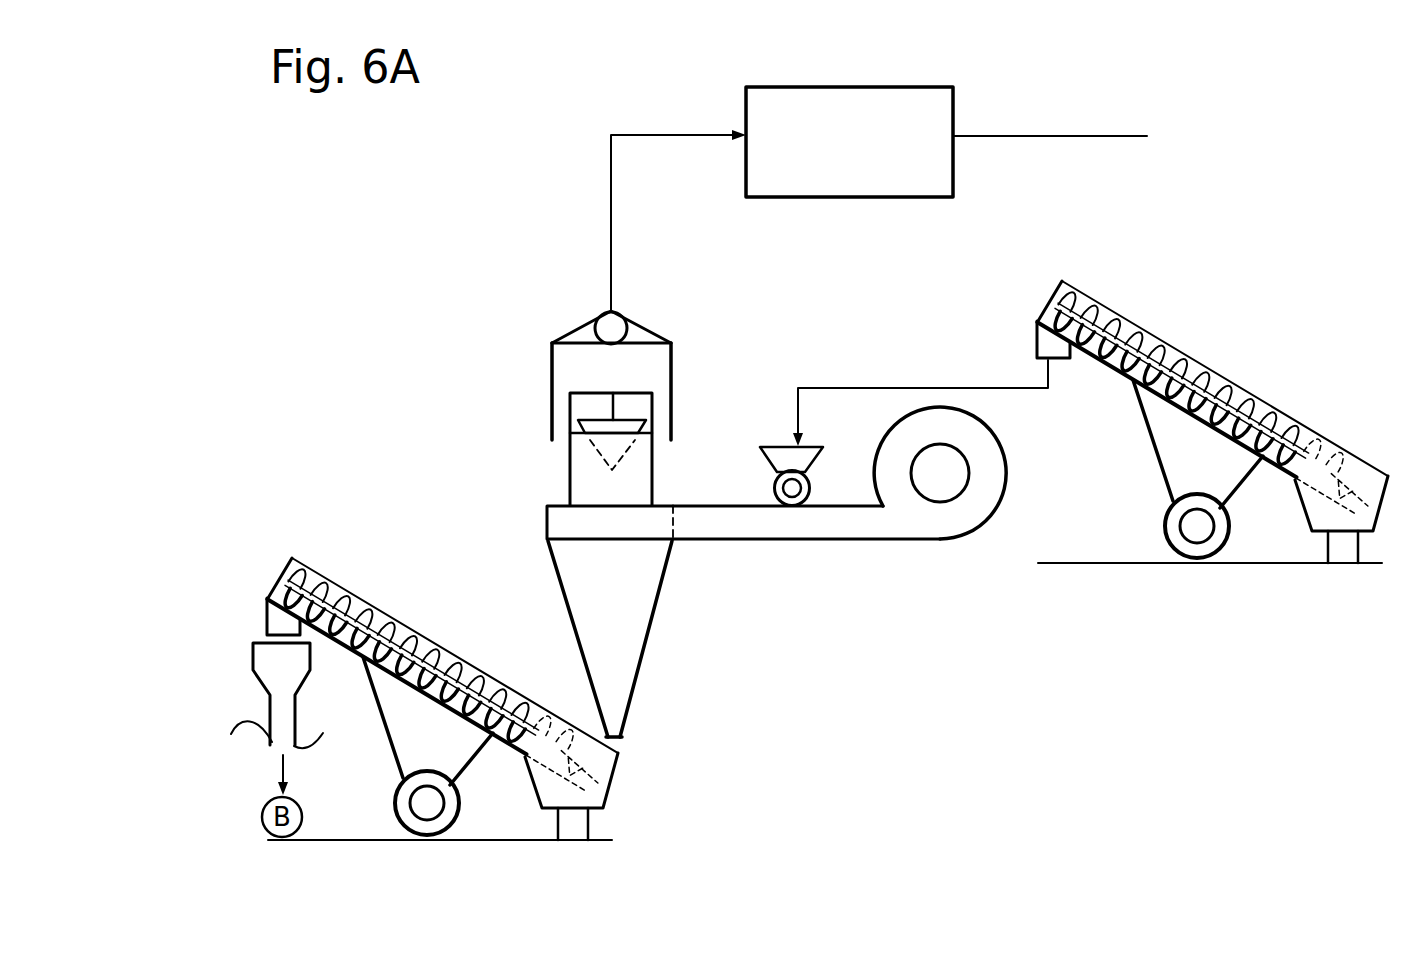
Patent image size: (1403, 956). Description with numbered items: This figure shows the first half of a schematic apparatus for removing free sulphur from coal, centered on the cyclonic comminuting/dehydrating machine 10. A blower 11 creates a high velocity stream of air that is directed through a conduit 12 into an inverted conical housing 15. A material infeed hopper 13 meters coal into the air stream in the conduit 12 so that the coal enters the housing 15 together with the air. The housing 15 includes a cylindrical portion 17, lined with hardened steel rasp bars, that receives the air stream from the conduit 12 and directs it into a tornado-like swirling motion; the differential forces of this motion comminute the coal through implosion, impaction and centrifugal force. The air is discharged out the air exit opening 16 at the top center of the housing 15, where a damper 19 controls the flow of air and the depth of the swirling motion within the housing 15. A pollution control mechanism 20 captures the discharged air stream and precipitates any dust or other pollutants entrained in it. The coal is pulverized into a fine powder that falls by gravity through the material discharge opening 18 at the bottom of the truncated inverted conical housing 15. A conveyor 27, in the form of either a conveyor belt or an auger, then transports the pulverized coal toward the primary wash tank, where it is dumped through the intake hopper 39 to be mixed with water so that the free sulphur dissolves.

The cyclonic comminuting/dehydrating machine 10 is at (449, 302).
The blower 11 is at (1007, 493).
The conduit 12 is at (835, 540).
The material infeed hopper 13 is at (824, 468).
The inverted conical housing 15 is at (658, 598).
The air exit opening 16 is at (628, 490).
The cylindrical portion 17 is at (548, 528).
The material discharge opening 18 is at (627, 733).
The damper 19 is at (595, 421).
The pollution control mechanism 20 is at (907, 87).
The conveyor 27 is at (312, 567).
The intake hopper 39 is at (253, 648).